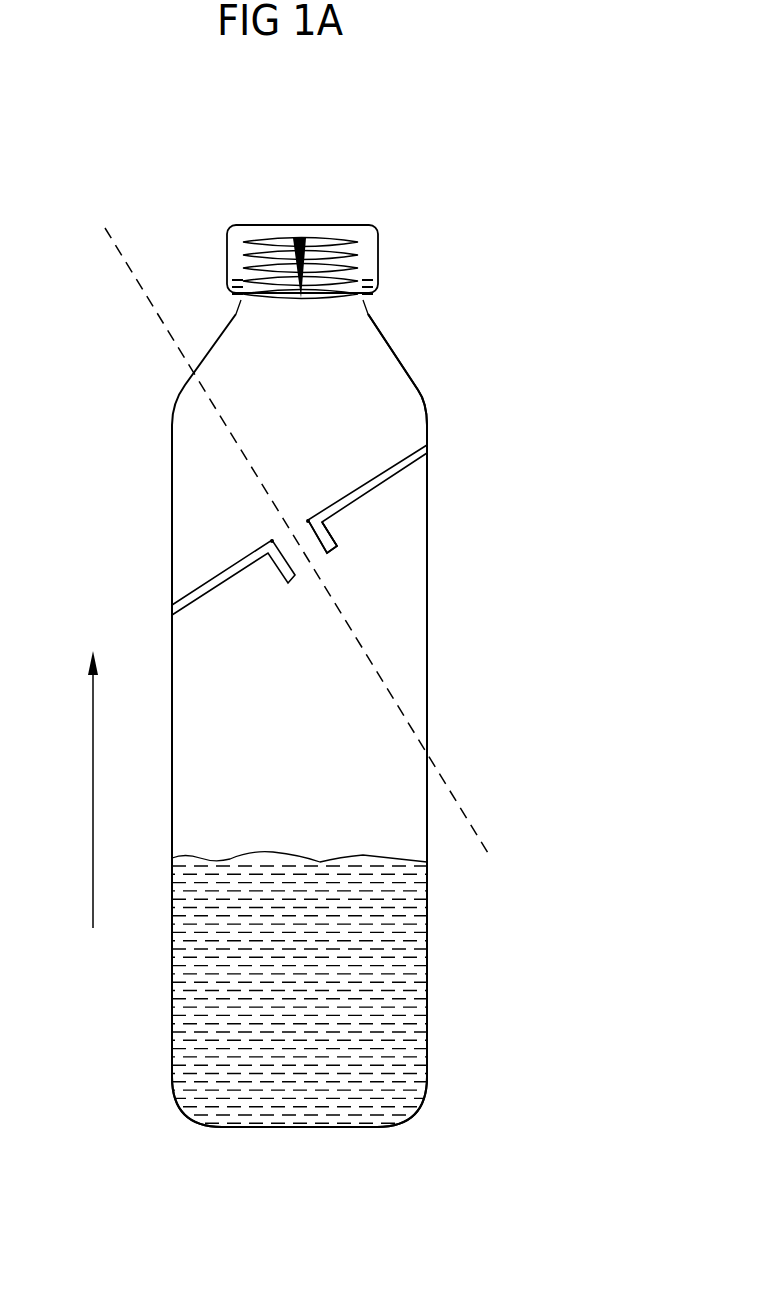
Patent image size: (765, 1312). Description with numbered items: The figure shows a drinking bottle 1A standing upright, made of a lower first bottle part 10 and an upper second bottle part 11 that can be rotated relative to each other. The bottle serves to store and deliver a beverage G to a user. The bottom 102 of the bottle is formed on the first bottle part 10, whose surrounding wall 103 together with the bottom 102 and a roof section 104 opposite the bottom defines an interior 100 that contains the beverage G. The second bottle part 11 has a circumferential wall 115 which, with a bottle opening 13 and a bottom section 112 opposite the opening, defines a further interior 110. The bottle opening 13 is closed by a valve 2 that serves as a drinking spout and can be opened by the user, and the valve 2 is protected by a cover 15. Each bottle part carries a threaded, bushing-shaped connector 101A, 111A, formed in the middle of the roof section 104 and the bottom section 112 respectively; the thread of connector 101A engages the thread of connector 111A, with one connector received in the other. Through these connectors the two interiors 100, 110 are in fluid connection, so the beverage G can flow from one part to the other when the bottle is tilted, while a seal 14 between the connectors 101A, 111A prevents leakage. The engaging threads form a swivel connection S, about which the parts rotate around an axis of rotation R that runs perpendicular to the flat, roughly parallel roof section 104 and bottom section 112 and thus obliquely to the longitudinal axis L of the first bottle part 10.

The drinking bottle 1A is at (424, 217).
The valve 2 is at (238, 245).
The cover 15 is at (380, 260).
The bottle opening 13 is at (363, 302).
The second bottle part 11 is at (429, 406).
The further interior 110 is at (318, 385).
The seal 14 is at (308, 520).
The circumferential wall 115 is at (171, 468).
The swivel connection S is at (258, 528).
The roof section 104 is at (383, 483).
The connector 111A is at (323, 530).
The connector 101A is at (337, 540).
The bottom section 112 is at (203, 587).
The first bottle part 10 is at (427, 617).
The interior 100 is at (298, 720).
The longitudinal axis L is at (93, 802).
The axis of rotation R is at (450, 790).
The surrounding wall 103 is at (427, 963).
The beverage G is at (388, 1040).
The bottom 102 is at (310, 1127).